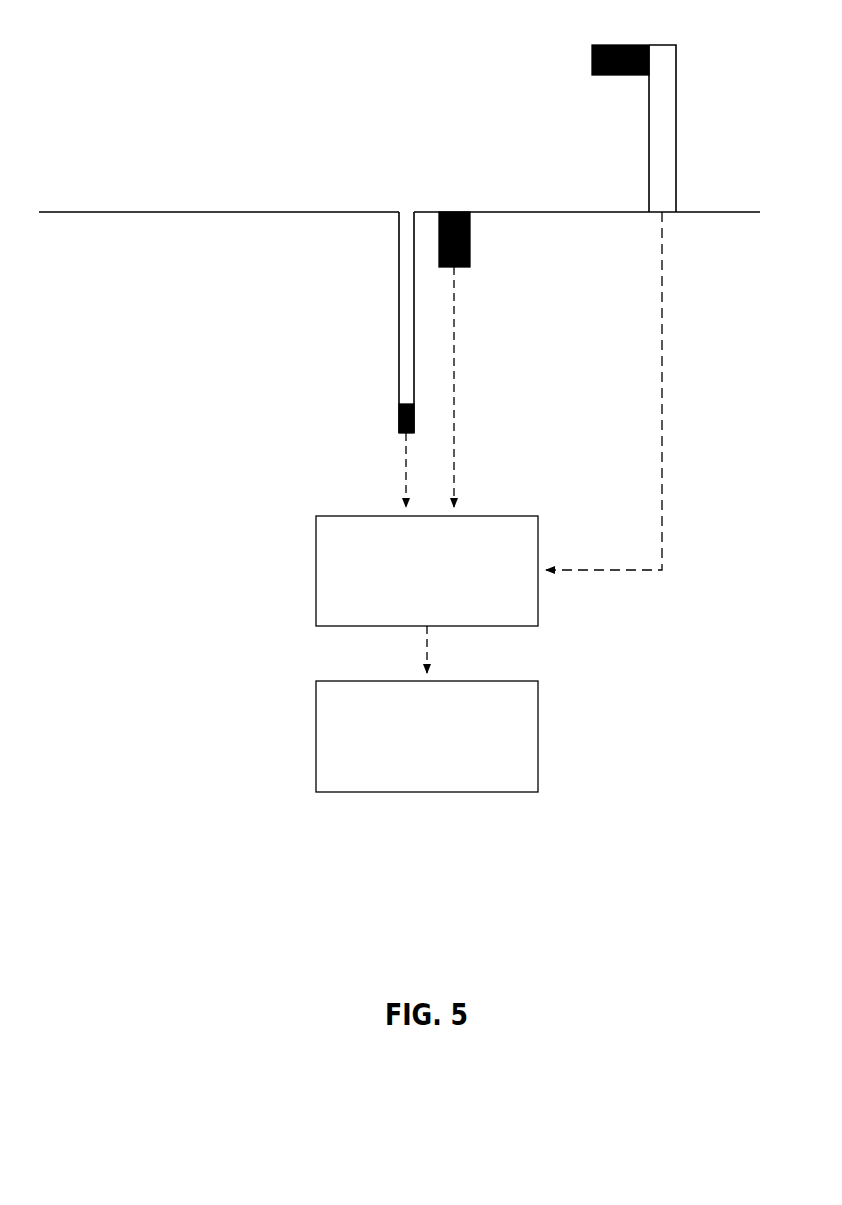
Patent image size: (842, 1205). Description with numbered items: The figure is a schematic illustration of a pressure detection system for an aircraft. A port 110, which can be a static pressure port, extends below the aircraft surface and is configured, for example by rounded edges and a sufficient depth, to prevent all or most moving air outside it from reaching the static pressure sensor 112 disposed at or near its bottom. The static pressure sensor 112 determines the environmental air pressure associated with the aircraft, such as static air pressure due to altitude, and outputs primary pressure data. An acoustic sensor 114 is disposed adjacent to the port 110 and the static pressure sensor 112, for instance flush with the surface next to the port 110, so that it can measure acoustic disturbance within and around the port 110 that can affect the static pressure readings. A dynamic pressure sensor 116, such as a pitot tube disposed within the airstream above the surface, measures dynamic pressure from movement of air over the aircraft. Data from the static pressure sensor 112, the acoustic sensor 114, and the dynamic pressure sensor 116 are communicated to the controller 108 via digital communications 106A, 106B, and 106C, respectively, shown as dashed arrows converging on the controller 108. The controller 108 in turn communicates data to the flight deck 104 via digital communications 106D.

The flight deck 104 is at (427, 736).
The digital communications 106A is at (406, 474).
The digital communications 106B is at (454, 419).
The digital communications 106C is at (662, 418).
The digital communications 106D is at (427, 650).
The controller 108 is at (427, 571).
The port 110 is at (399, 267).
The static pressure sensor 112 is at (399, 418).
The acoustic sensor 114 is at (452, 210).
The dynamic pressure sensor 116 is at (662, 45).